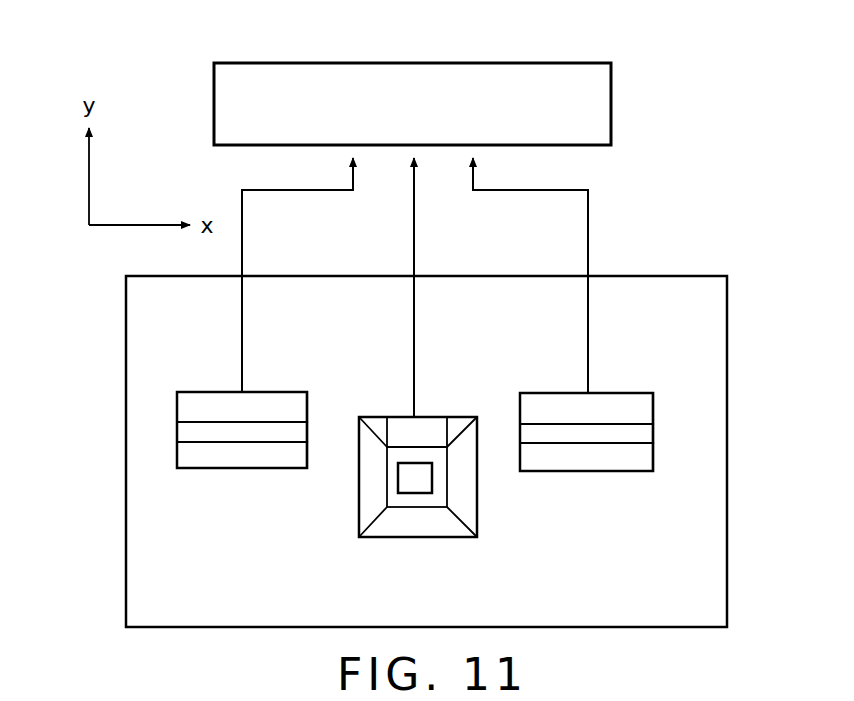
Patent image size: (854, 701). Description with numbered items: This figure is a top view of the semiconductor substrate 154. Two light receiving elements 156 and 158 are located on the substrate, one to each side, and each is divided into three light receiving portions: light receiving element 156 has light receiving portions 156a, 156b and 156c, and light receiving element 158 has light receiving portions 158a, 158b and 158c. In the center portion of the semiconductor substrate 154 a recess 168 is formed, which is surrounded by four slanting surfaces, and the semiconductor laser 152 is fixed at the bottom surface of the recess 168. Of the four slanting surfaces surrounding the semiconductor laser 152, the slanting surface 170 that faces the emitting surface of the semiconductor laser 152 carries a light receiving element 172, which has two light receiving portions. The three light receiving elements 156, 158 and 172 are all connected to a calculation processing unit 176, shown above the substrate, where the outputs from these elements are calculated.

The calculation processing unit 176 is at (612, 105).
The semiconductor substrate 154 is at (546, 290).
The light receiving element 156 is at (242, 478).
The light receiving portion 156a is at (187, 405).
The light receiving portion 156b is at (187, 429).
The light receiving portion 156c is at (187, 455).
The light receiving element 158 is at (598, 480).
The light receiving portion 158a is at (640, 406).
The light receiving portion 158b is at (645, 437).
The light receiving portion 158c is at (648, 459).
The recess 168 is at (432, 475).
The slanting surface 170 is at (374, 427).
The light receiving element 172 is at (405, 425).
The semiconductor laser 152 is at (417, 485).